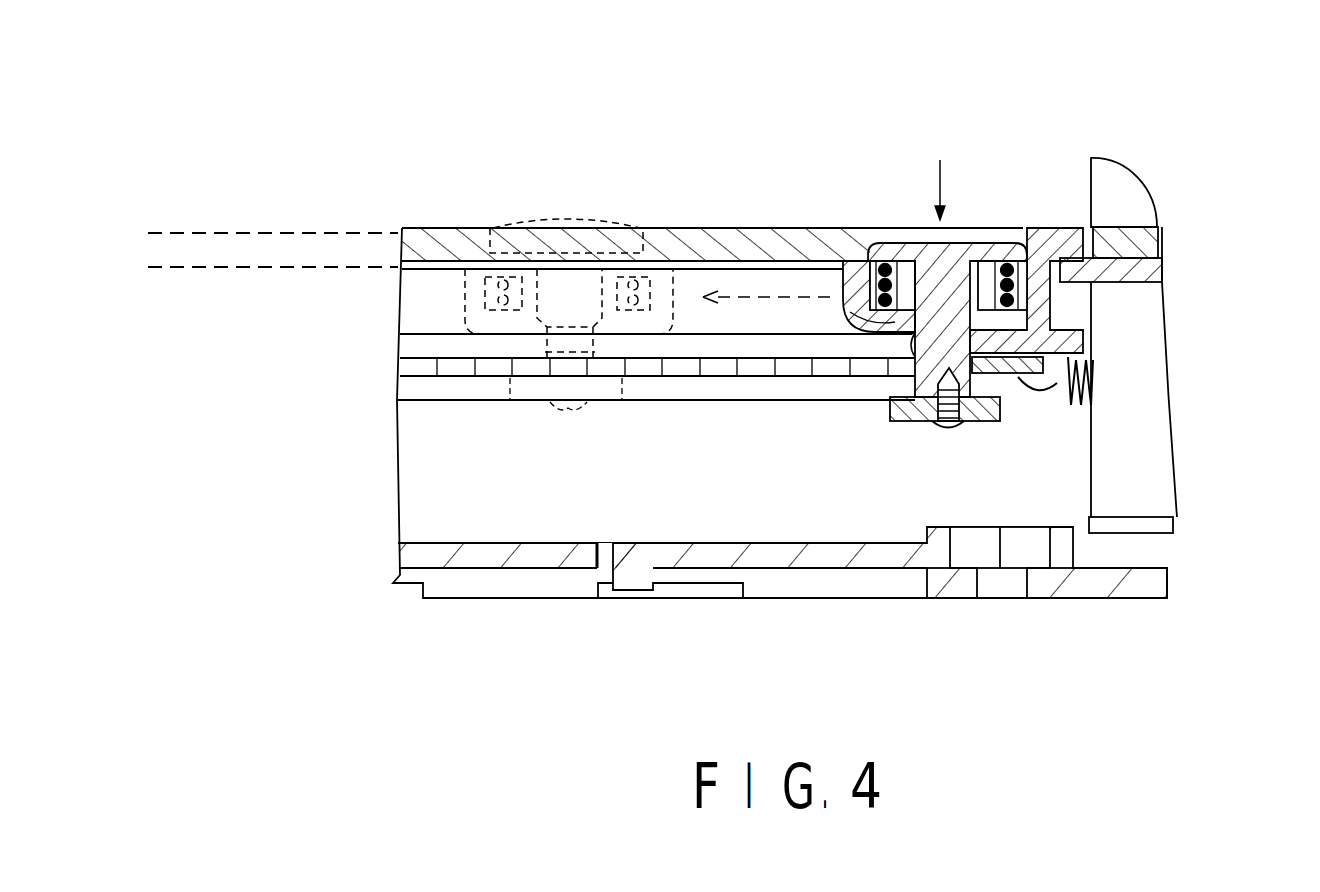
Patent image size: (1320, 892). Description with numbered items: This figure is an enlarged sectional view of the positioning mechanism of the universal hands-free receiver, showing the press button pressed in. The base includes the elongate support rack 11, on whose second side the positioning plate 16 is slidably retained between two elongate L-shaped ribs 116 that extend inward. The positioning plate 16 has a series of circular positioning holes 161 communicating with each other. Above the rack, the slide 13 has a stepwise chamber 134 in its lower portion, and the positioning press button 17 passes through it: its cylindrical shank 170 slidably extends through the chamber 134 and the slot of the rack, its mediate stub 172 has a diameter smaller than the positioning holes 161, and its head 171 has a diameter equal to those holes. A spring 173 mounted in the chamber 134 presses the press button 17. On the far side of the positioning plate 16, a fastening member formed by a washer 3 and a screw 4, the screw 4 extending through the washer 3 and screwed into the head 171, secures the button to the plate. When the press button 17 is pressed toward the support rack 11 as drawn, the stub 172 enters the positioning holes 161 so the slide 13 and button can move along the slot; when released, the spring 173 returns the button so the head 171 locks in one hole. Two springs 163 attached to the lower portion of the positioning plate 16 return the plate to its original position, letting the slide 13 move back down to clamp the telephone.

The washer 3 is at (903, 418).
The screw 4 is at (946, 430).
The support rack 11 is at (1070, 308).
The slide 13 is at (728, 229).
The positioning plate 16 is at (712, 378).
The positioning press button 17 is at (567, 222).
The L-shaped ribs 116 is at (490, 402).
The stepwise chamber 134 is at (1000, 230).
The positioning holes 161 is at (448, 370).
The springs 163 is at (1093, 380).
The cylindrical shank 170 is at (843, 300).
The head 171 is at (1020, 380).
The stub 172 is at (913, 357).
The spring 173 is at (882, 258).